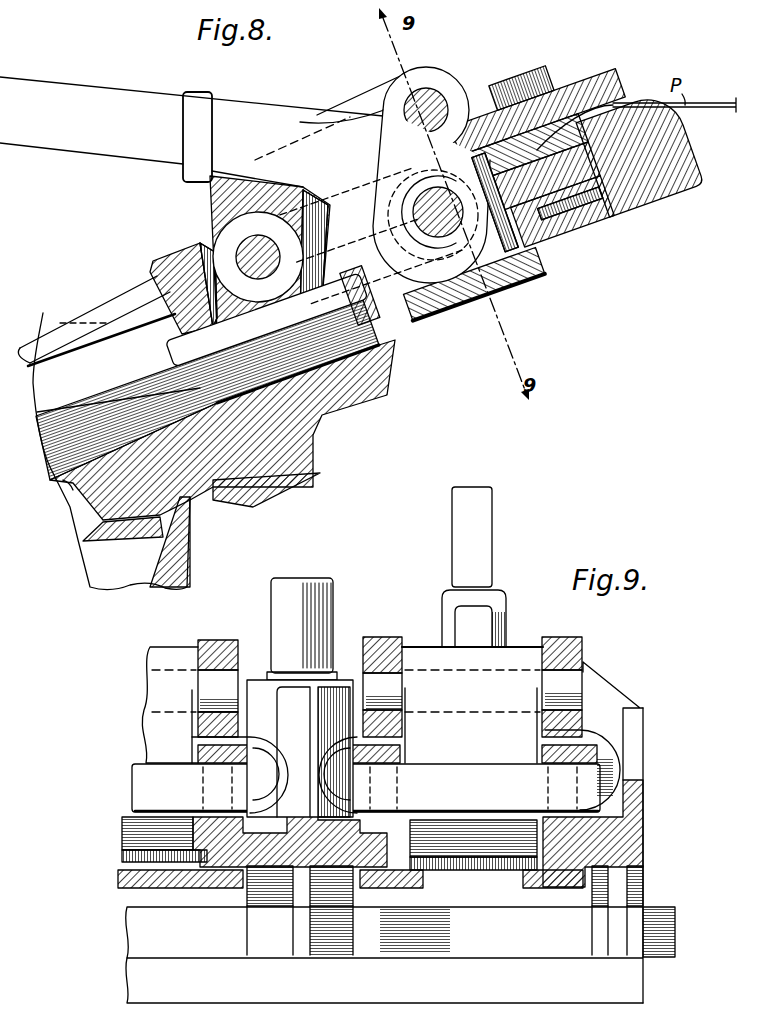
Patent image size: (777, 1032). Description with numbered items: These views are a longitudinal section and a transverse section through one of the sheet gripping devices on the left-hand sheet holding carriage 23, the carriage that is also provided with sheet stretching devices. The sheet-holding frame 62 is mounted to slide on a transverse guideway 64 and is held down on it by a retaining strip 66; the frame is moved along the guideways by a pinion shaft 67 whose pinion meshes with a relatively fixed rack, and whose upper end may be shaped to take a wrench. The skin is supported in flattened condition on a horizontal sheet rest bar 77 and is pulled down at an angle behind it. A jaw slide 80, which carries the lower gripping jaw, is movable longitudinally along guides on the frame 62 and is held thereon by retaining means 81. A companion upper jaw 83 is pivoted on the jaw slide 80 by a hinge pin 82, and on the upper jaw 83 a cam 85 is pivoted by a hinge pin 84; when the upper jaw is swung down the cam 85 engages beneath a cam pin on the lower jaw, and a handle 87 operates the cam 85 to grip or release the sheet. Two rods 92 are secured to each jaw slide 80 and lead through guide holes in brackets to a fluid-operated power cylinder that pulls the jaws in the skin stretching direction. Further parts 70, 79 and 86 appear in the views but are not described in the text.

In FIG. 8, the sheet holding carriage 23 is at (88, 586).
In FIG. 8, the sheet-holding frame 62 is at (323, 413).
In FIG. 9, the sheet-holding frame 62 is at (645, 825).
In FIG. 8, the transverse guideway 64 is at (180, 473).
In FIG. 9, the transverse guideway 64 is at (470, 933).
In FIG. 8, the retaining strip 66 is at (257, 507).
In FIG. 9, the retaining strip 66 is at (277, 980).
In FIG. 9, the pinion shaft 67 is at (325, 655).
In FIG. 8, the wedge support 70 is at (170, 563).
In FIG. 8, the horizontal sheet rest bar 77 is at (672, 137).
In FIG. 8, the bracket upright 79 is at (607, 215).
In FIG. 9, the bracket upright 79 is at (645, 843).
In FIG. 8, the jaw slide 80 is at (178, 352).
In FIG. 9, the jaw slide 80 is at (257, 875).
In FIG. 8, the retaining means 81 is at (535, 274).
In FIG. 9, the retaining means 81 is at (235, 890).
In FIG. 8, the hinge pin 82 is at (212, 238).
In FIG. 8, the upper jaw 83 is at (488, 86).
In FIG. 9, the upper jaw 83 is at (237, 647).
In FIG. 8, the hinge pin 84 is at (425, 103).
In FIG. 9, the hinge pin 84 is at (148, 698).
In FIG. 8, the cam 85 is at (437, 243).
In FIG. 9, the cam 85 is at (138, 830).
In FIG. 8, the roller 86 is at (440, 243).
In FIG. 9, the roller 86 is at (145, 788).
In FIG. 8, the handle 87 is at (143, 99).
In FIG. 9, the handle 87 is at (480, 553).
In FIG. 8, the rod 92 is at (86, 314).